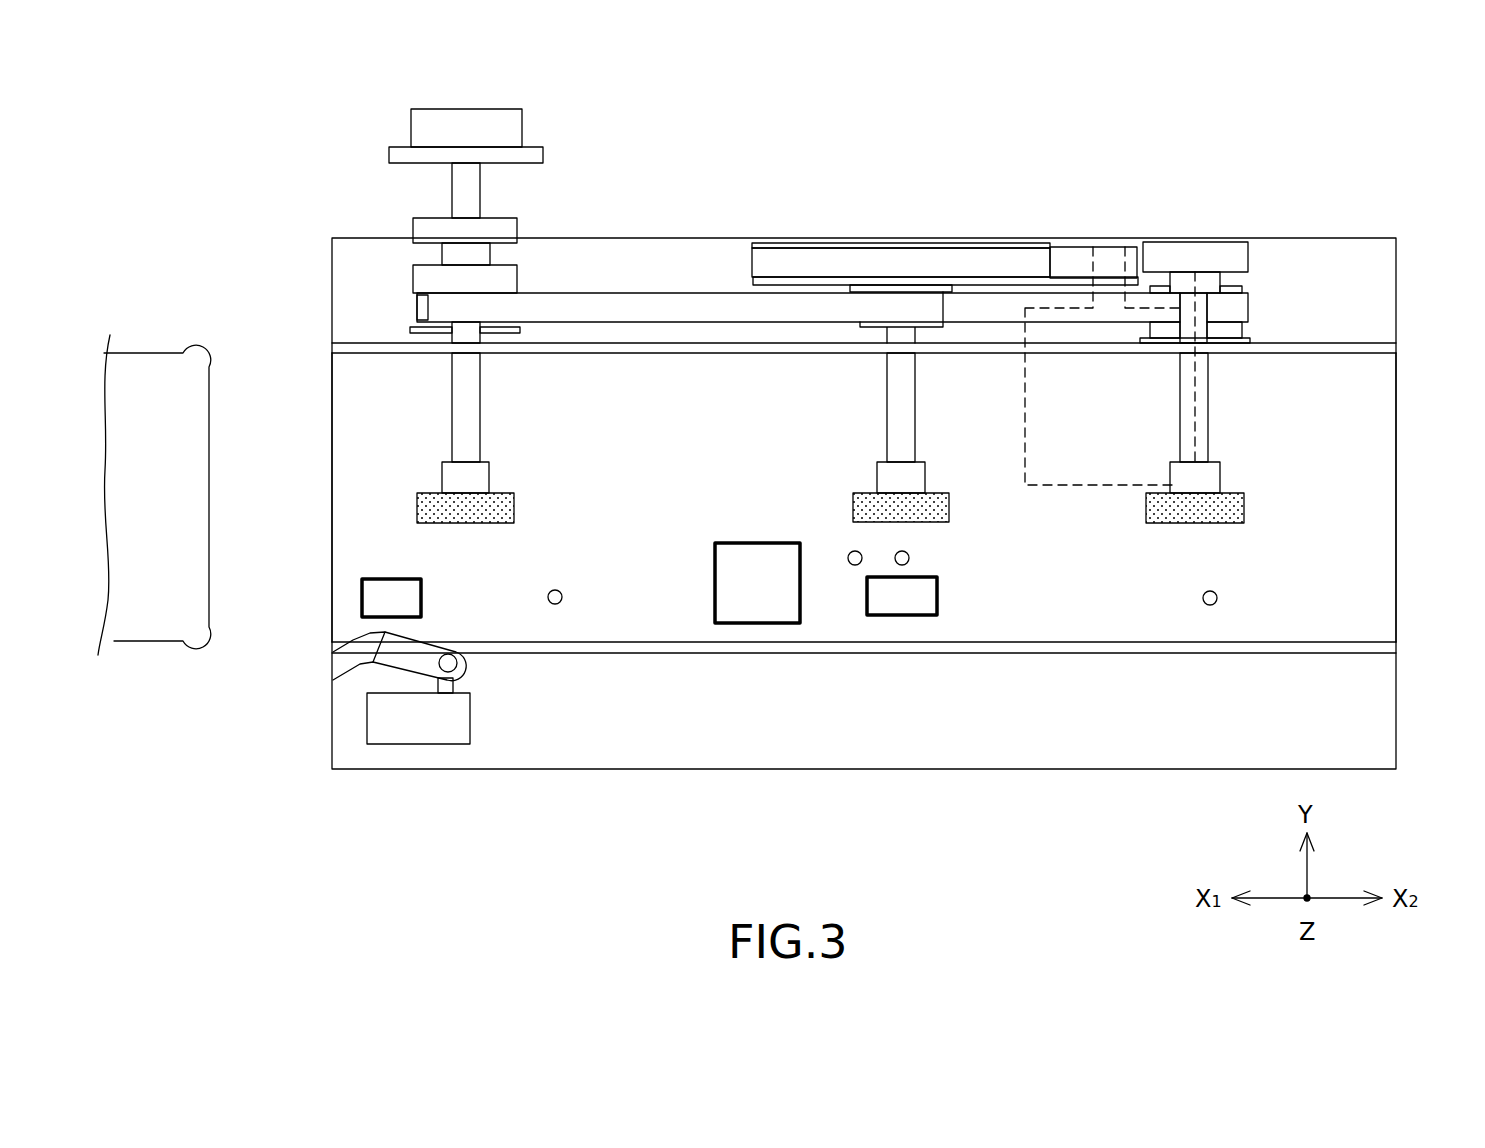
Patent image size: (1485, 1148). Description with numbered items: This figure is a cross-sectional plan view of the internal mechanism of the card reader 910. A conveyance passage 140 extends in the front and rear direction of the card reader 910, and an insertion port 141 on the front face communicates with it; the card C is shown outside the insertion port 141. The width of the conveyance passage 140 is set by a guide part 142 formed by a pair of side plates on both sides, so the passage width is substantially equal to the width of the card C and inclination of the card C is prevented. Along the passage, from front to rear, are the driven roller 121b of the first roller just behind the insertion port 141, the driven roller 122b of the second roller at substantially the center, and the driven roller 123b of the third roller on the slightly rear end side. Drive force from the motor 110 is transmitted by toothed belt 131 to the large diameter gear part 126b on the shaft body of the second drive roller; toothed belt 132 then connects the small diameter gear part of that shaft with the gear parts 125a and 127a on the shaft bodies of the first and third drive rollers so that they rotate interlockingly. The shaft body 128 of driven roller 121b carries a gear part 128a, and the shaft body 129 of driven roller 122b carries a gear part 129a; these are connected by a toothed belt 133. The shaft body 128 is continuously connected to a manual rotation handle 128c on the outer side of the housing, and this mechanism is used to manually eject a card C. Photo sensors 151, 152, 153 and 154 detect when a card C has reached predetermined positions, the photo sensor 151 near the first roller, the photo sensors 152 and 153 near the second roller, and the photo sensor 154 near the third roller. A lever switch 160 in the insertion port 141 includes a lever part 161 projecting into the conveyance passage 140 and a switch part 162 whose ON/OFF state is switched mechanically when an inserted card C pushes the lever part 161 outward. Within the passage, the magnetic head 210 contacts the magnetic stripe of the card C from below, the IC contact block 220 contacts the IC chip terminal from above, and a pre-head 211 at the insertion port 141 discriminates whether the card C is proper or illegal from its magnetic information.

The card reader 910 is at (180, 72).
The conveyance passage 140 is at (412, 400).
The guide part 142 is at (1352, 642).
The insertion port 141 is at (331, 581).
The manual rotation handle 128c is at (495, 108).
The gear part 128a is at (478, 292).
The toothed belt 133 is at (615, 307).
The gear part 125a is at (416, 308).
The shaft body 128 is at (470, 393).
The driven roller 121b is at (502, 493).
The large diameter gear part 126b is at (793, 241).
The toothed belt 131 is at (835, 262).
The toothed belt 132 is at (980, 305).
The gear part 129a is at (857, 323).
The shaft body 129 is at (905, 395).
The driven roller 122b is at (940, 493).
The gear part 127a is at (1250, 305).
The motor 110 is at (1128, 427).
The driven roller 123b is at (1232, 493).
The IC contact block 220 is at (740, 543).
The photo sensor 152 is at (848, 552).
The photo sensor 153 is at (910, 556).
The magnetic head 210 is at (938, 600).
The pre-head 211 is at (385, 579).
The photo sensor 151 is at (560, 592).
The photo sensor 154 is at (1217, 596).
The lever switch 160 is at (486, 721).
The lever part 161 is at (415, 650).
The switch part 162 is at (410, 730).
The card C is at (150, 643).